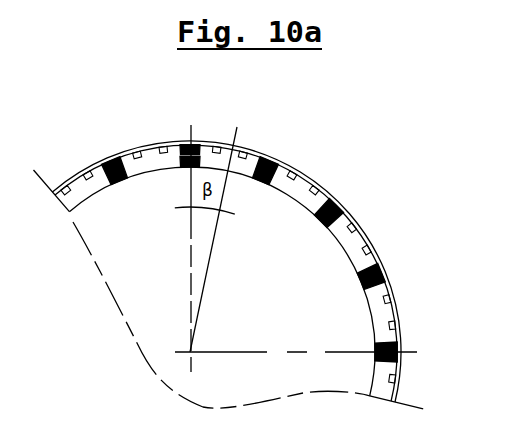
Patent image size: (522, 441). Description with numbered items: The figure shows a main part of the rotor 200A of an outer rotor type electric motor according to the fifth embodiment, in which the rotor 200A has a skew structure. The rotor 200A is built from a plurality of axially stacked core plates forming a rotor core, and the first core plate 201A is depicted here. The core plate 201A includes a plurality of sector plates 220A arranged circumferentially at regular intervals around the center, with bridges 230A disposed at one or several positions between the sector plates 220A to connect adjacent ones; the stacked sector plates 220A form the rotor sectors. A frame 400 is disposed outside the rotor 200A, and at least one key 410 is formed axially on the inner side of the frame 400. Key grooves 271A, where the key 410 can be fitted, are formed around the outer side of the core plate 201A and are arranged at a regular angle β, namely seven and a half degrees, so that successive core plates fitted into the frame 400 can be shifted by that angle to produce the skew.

The rotor 200A is at (335, 185).
The core plate 201A is at (132, 105).
The sector plate 220A is at (80, 182).
The bridge 230A is at (121, 160).
The key groove 271A is at (320, 187).
The frame 400 is at (365, 233).
The key 410 is at (193, 143).